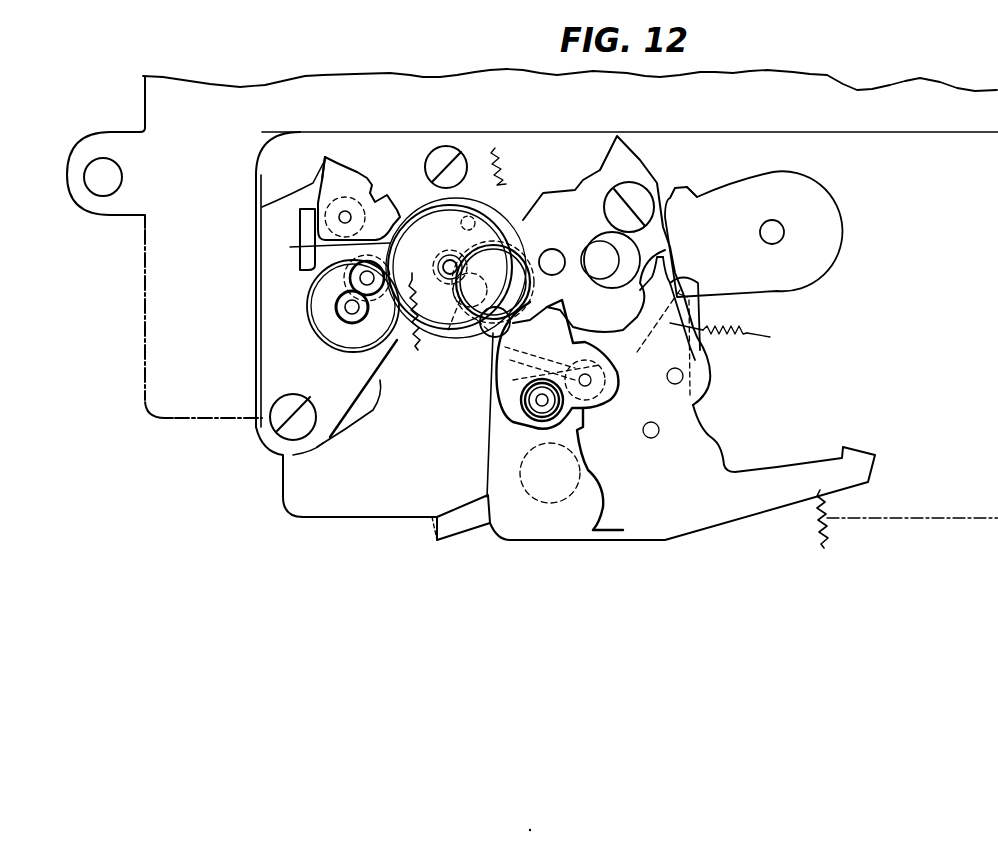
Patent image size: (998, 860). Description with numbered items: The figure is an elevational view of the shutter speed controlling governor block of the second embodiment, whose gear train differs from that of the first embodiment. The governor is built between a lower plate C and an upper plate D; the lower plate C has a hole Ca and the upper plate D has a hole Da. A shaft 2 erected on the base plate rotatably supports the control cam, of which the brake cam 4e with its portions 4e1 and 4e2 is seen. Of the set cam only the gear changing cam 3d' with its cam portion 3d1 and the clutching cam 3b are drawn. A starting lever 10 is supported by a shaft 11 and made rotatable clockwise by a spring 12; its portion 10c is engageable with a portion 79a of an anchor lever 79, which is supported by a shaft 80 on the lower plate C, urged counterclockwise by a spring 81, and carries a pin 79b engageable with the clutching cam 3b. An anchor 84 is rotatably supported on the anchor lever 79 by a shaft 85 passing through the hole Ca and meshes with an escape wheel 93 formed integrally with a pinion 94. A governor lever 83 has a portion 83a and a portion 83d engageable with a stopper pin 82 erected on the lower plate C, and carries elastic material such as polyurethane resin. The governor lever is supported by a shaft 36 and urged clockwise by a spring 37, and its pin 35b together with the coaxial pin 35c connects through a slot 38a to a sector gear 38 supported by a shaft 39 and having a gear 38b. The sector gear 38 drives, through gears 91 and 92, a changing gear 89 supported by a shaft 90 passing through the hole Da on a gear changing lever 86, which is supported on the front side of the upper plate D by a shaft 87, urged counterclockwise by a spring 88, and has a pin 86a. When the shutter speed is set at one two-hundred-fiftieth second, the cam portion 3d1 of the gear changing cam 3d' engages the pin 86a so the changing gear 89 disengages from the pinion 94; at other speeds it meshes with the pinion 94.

The shaft 2 is at (785, 229).
The brake cam 4e is at (808, 233).
The portion of brake cam 4e1 is at (697, 197).
The portion of brake cam 4e2 is at (678, 297).
The clutching cam 3b is at (578, 220).
The cam portion of gear changing cam 3d1 is at (583, 218).
The gear changing cam 3d' is at (643, 157).
The starting lever 10 is at (565, 357).
The portion of starting lever 10c is at (487, 440).
The shaft 11 is at (660, 430).
The spring 12 is at (828, 513).
The pin 35b is at (547, 410).
The pin 35c is at (553, 410).
The shaft 36 is at (684, 377).
The spring 37 is at (720, 320).
The sector gear 38 is at (593, 403).
The slot 38a is at (542, 410).
The gear 38b is at (531, 410).
The shaft 39 is at (591, 380).
The anchor lever 79 is at (408, 207).
The portion of anchor lever 79a is at (477, 320).
The pin 79b is at (447, 333).
The shaft 80 is at (470, 218).
The spring 81 is at (505, 162).
The stopper pin 82 is at (637, 250).
The governor lever 83 is at (707, 362).
The portion of governor lever 83a is at (677, 293).
The portion of governor lever 83d is at (663, 268).
The anchor 84 is at (327, 155).
The shaft 85 is at (346, 212).
The gear changing lever 86 is at (497, 257).
The pin 86a is at (490, 336).
The shaft 87 is at (450, 260).
The spring 88 is at (420, 365).
The changing gear 89 is at (340, 287).
The shaft 90 is at (359, 278).
The gear 91 is at (510, 292).
The gear 92 is at (540, 210).
The escape wheel 93 is at (308, 325).
The pinion 94 is at (334, 307).
The lower plate C is at (367, 370).
The hole Ca is at (400, 205).
The upper plate D is at (372, 392).
The hole Da is at (340, 250).